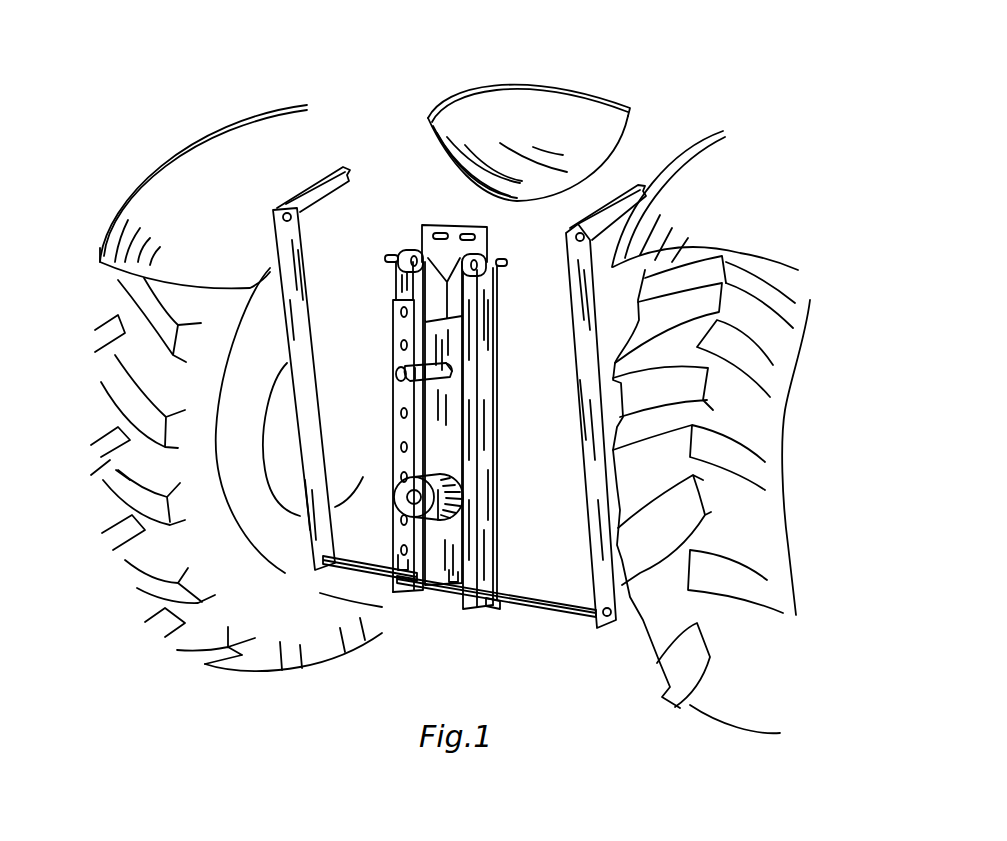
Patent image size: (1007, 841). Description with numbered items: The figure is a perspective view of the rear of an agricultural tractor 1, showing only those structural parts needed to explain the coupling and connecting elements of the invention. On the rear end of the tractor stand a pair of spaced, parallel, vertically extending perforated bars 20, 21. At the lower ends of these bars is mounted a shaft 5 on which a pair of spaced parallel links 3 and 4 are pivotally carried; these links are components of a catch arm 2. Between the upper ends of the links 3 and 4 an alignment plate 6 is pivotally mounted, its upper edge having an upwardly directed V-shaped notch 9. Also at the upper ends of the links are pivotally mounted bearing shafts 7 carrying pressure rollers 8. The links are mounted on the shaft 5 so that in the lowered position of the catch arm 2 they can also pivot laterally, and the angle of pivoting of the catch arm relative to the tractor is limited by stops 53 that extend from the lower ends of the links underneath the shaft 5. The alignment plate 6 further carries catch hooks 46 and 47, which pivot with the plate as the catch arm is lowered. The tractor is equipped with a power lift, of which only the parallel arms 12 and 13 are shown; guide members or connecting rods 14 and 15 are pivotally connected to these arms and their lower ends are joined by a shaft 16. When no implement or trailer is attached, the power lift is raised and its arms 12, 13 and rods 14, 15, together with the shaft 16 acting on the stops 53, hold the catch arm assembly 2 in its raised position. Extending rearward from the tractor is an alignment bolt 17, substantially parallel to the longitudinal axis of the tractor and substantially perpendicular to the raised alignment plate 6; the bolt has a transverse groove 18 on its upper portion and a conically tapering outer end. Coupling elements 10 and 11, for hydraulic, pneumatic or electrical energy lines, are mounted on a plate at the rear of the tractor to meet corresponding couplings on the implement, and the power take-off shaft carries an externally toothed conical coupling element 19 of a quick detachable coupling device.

The agricultural tractor 1 is at (520, 63).
The catch arm 2 is at (500, 455).
The link 3 is at (480, 525).
The link 4 is at (400, 287).
The shaft 5 is at (415, 595).
The alignment plate 6 is at (445, 305).
The bearing shaft 7 is at (387, 257).
The pressure roller 8 is at (410, 250).
The V-shaped notch 9 is at (433, 257).
The coupling element 10 is at (442, 235).
The coupling element 11 is at (467, 234).
The power lift arm 12 is at (325, 187).
The power lift arm 13 is at (612, 200).
The connecting rod 14 is at (320, 533).
The connecting rod 15 is at (593, 485).
The shaft 16 is at (343, 568).
The alignment bolt 17 is at (403, 372).
The transverse groove 18 is at (430, 365).
The coupling element 19 is at (443, 500).
The perforated bar 20 is at (397, 428).
The perforated bar 21 is at (470, 420).
The catch hook 46 is at (398, 563).
The catch hook 47 is at (452, 577).
The stop 53 is at (490, 613).